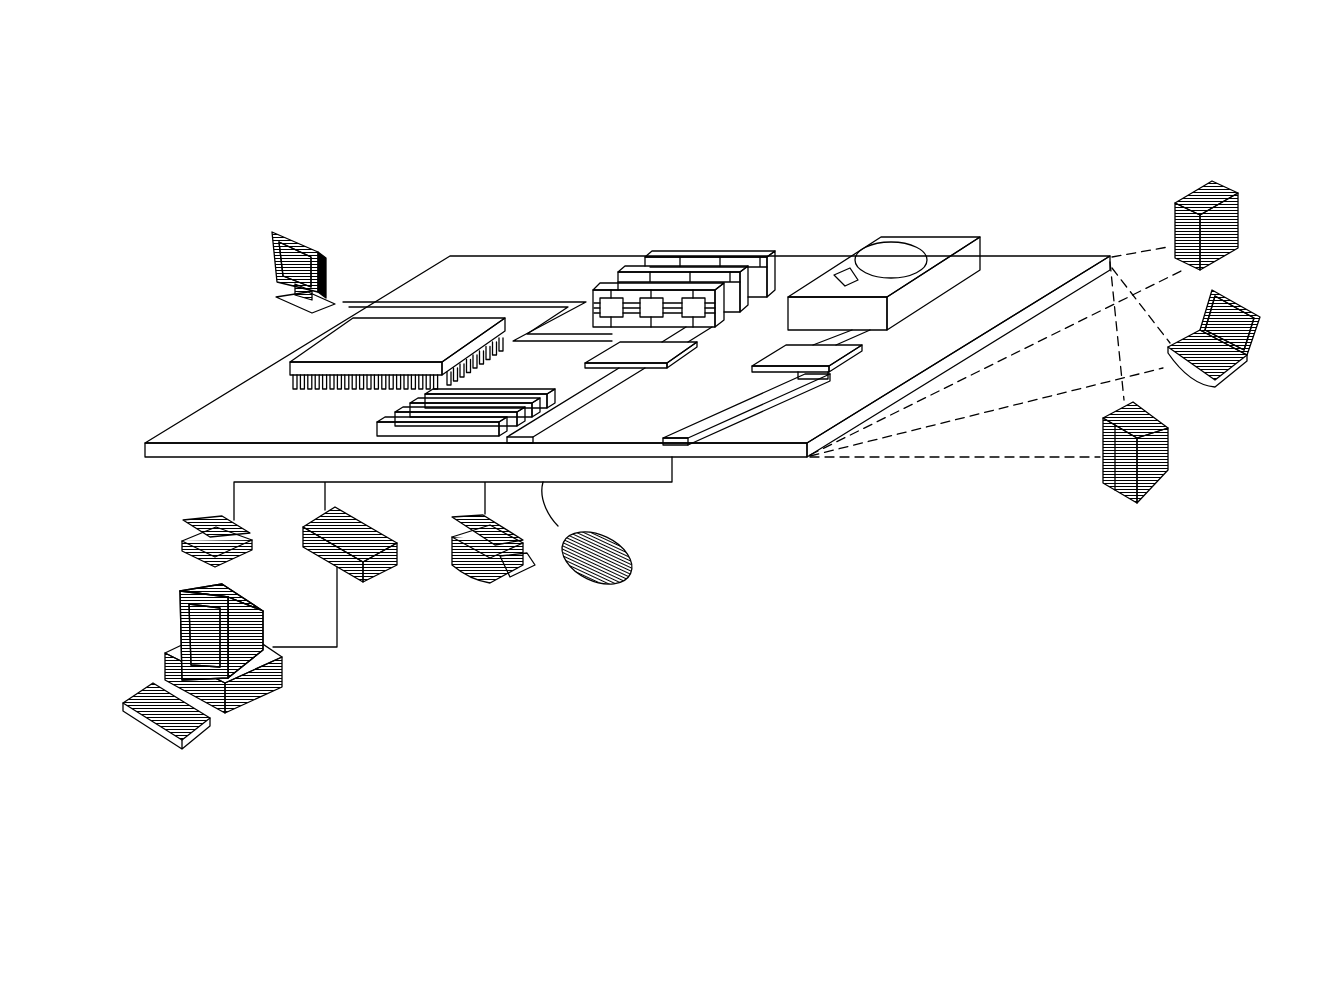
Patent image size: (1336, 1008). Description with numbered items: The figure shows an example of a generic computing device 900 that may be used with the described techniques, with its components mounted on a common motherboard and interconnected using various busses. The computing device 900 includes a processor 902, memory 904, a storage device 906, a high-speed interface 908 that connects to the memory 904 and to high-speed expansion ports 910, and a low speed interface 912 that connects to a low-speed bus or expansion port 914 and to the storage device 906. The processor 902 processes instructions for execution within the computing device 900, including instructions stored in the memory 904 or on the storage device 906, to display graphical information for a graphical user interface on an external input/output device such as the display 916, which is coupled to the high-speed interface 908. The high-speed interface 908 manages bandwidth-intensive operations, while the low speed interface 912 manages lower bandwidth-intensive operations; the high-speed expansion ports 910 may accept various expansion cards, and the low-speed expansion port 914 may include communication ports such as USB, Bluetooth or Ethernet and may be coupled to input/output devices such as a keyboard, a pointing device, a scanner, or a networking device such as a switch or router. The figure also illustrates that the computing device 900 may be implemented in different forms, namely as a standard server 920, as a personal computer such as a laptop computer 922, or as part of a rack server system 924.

The computing device 900 is at (236, 144).
The processor 902 is at (305, 344).
The memory 904 is at (694, 252).
The storage device 906 is at (881, 237).
The high-speed interface 908 is at (652, 384).
The high-speed expansion ports 910 is at (377, 424).
The low speed interface 912 is at (782, 347).
The low-speed expansion port 914 is at (672, 437).
The display 916 is at (272, 230).
The standard server 920 is at (1177, 200).
The laptop computer 922 is at (1250, 372).
The rack server system 924 is at (1170, 445).